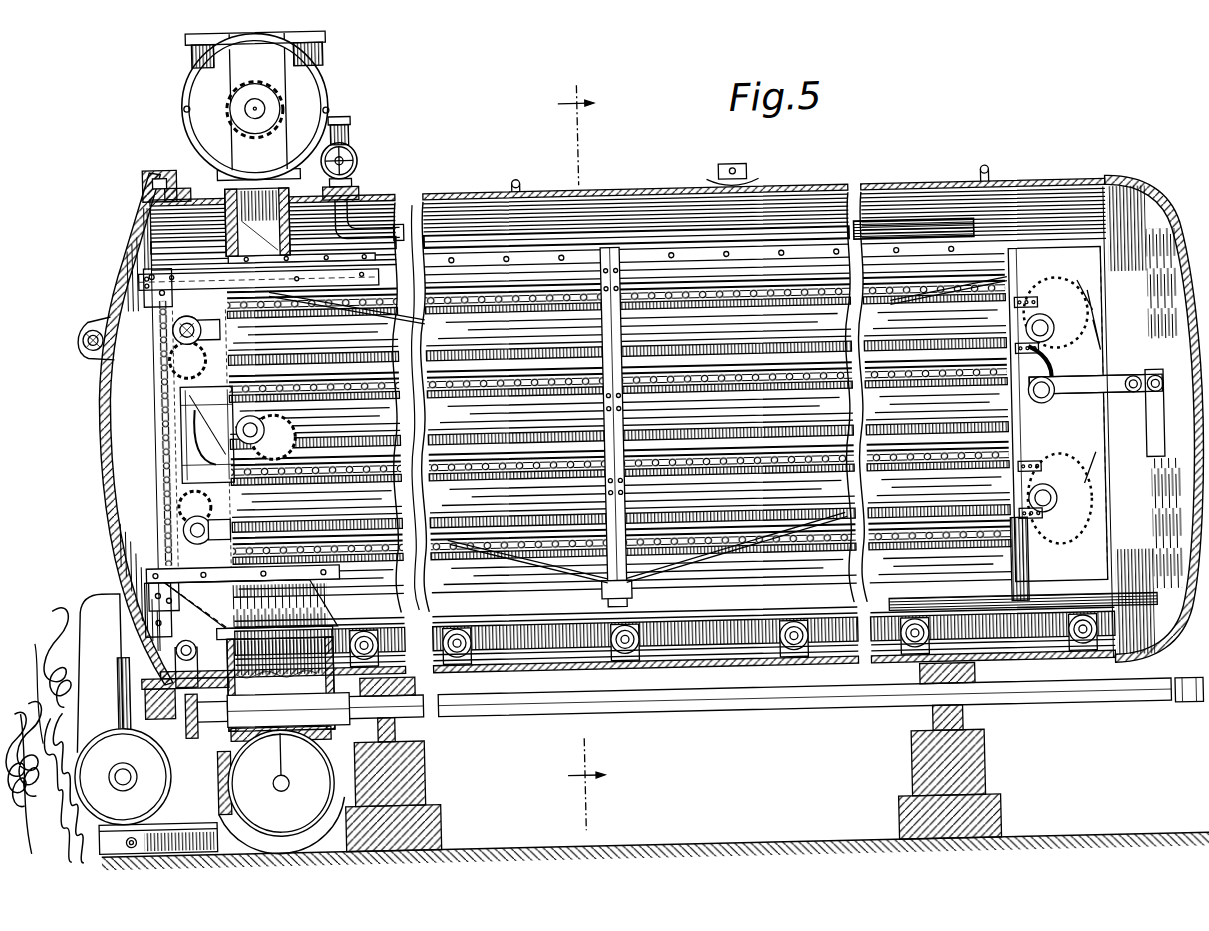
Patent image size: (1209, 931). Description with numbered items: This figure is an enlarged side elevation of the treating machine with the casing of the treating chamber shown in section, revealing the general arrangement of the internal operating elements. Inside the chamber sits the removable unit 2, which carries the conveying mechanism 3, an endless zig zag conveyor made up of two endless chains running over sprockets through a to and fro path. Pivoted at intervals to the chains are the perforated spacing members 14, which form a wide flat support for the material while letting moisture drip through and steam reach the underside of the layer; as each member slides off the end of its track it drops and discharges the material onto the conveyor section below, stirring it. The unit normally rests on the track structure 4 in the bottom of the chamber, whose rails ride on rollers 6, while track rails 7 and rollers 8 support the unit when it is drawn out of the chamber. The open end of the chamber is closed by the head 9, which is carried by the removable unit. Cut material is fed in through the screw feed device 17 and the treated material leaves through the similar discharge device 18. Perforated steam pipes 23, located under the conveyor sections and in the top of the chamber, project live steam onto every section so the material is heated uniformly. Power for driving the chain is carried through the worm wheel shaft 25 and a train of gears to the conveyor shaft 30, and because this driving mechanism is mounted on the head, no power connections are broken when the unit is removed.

The removable unit 2 is at (614, 247).
The conveying mechanism 3 is at (452, 289).
The track structure 4 is at (616, 652).
The rollers 6 is at (587, 446).
The track rails 7 is at (169, 823).
The rollers 8 is at (139, 769).
The head 9 is at (115, 283).
The spacing members 14 is at (1013, 302).
The screw feed device 17 is at (313, 86).
The discharge device 18 is at (280, 740).
The steam pipe 23 is at (794, 231).
The worm wheel shaft 25 is at (69, 339).
The conveyor shaft 30 is at (186, 326).